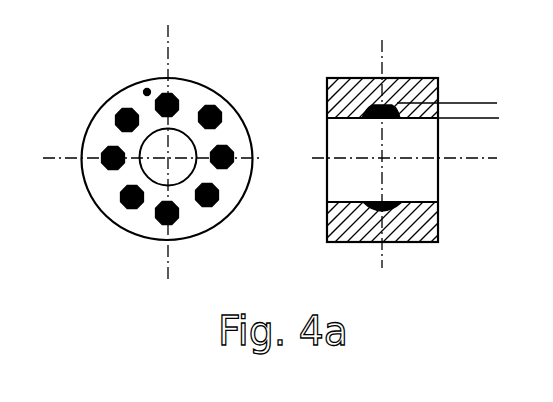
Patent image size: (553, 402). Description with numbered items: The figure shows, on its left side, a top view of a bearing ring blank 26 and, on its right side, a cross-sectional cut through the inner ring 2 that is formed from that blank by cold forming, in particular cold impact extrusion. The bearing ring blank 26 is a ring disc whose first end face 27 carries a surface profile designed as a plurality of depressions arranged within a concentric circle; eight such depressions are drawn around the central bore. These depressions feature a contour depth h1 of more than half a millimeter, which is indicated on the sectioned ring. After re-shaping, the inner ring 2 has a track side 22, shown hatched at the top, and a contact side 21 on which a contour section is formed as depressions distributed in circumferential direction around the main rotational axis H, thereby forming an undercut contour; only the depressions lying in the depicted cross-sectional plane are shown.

The inner ring 2 is at (438, 219).
The contact side 21 is at (410, 119).
The track side 22 is at (415, 78).
The bearing ring blank 26 is at (211, 86).
The first end face 27 is at (146, 89).
The contour depth h1 is at (464, 112).
The main rotational axis H is at (490, 161).